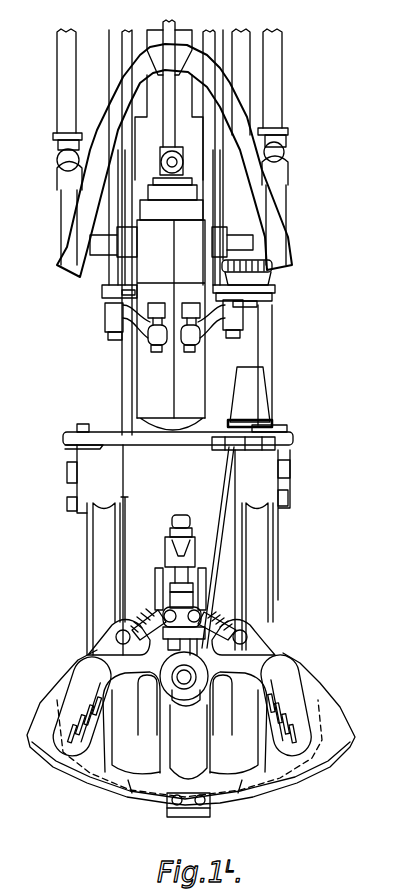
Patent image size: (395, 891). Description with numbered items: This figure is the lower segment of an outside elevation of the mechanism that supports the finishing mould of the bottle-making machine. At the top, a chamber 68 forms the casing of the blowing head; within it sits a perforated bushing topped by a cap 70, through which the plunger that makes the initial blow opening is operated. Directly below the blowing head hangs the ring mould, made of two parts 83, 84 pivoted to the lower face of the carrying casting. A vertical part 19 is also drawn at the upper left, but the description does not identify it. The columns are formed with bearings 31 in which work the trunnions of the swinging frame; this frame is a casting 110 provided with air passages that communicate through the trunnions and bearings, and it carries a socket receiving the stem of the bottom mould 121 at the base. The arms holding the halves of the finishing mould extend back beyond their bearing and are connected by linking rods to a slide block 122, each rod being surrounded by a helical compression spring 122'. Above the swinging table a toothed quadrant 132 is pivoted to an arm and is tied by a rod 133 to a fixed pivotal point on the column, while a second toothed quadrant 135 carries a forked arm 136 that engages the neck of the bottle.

The lifting rod 19 is at (41, 147).
The cap 70 is at (160, 202).
The chamber 68 is at (147, 247).
The ring mould part 84 is at (140, 284).
The ring mould part 83 is at (195, 273).
The bearings 31 is at (290, 477).
The casting 110 is at (103, 556).
The rod 133 is at (222, 553).
The slide block 122 is at (119, 571).
The helical compression spring 122' is at (178, 612).
The toothed quadrant 132 is at (252, 627).
The forked arm 136 is at (107, 650).
The toothed quadrant 135 is at (283, 653).
The bottom mould 121 is at (152, 788).